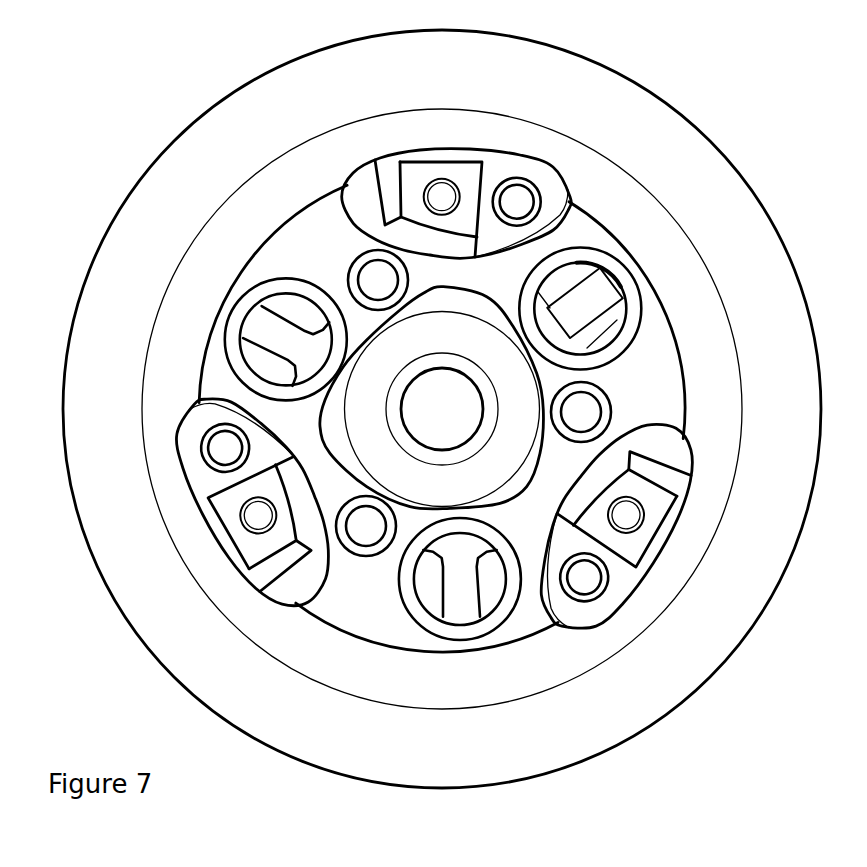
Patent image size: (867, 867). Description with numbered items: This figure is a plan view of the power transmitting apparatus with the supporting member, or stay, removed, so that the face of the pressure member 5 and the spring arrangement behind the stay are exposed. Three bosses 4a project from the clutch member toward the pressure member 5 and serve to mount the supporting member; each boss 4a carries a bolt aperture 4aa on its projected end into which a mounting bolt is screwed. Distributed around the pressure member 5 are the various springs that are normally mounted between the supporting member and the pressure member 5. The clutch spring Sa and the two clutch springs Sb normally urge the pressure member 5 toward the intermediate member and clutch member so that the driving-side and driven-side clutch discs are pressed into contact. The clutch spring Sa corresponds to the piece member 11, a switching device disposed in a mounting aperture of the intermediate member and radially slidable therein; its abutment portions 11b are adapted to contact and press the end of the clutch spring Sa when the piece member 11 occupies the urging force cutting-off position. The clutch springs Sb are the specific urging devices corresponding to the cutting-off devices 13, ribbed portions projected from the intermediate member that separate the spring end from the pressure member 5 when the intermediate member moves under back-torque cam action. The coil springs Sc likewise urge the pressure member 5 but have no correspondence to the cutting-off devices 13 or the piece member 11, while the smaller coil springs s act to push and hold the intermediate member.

The pressure member 5 is at (110, 222).
The bosses 4a is at (458, 168).
The bolt apertures 4aa is at (440, 193).
The coil springs s is at (528, 187).
The clutch spring Sa is at (607, 250).
The clutch springs Sb is at (255, 295).
The coil springs Sc is at (362, 265).
The piece member 11 is at (617, 297).
The abutment portions 11b is at (592, 305).
The cutting-off device 13 is at (267, 337).